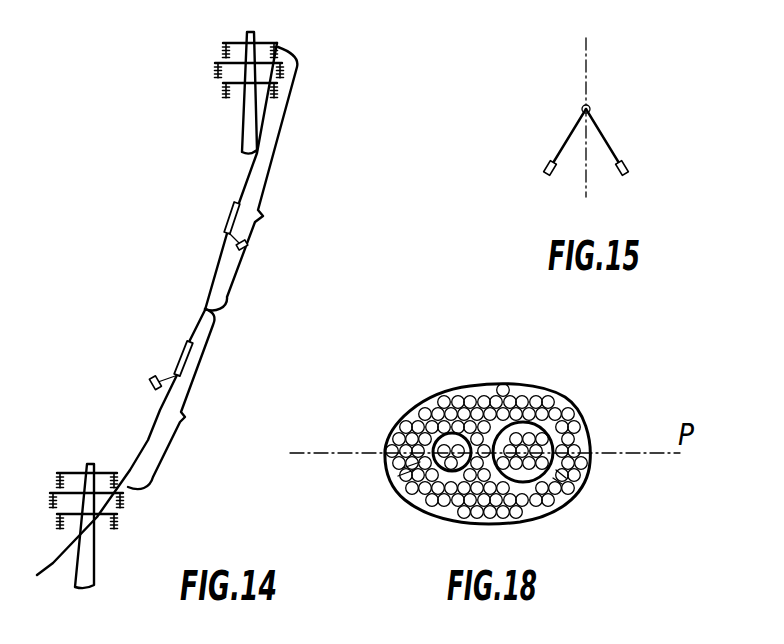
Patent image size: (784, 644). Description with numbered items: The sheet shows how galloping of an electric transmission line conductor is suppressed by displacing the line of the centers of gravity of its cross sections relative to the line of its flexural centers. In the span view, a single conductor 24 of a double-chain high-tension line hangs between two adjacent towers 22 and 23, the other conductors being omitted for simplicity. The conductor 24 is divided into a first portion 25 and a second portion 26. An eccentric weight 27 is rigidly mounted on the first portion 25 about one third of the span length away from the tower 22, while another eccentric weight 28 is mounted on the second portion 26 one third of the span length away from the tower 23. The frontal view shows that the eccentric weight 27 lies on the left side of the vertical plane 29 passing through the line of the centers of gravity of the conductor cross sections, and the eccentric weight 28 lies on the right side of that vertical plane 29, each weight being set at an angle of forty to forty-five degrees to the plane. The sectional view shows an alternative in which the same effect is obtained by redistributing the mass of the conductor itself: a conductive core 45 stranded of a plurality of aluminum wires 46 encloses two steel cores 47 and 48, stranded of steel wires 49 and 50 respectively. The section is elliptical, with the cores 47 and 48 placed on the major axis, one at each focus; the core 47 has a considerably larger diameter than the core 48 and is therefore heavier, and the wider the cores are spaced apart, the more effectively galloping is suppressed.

In FIG. 14, the tower 22 is at (88, 567).
In FIG. 14, the tower 23 is at (243, 114).
In FIG. 14, the conductor 24 is at (154, 425).
In FIG. 15, the conductor 24 is at (592, 109).
In FIG. 14, the first portion 25 is at (172, 399).
In FIG. 14, the second portion 26 is at (251, 178).
In FIG. 14, the eccentric weight 27 is at (147, 382).
In FIG. 15, the eccentric weight 27 is at (549, 162).
In FIG. 14, the eccentric weight 28 is at (236, 246).
In FIG. 15, the eccentric weight 28 is at (626, 171).
In FIG. 15, the vertical plane 29 is at (587, 85).
In FIG. 18, the core 45 is at (570, 390).
In FIG. 18, the aluminum wires 46 is at (468, 396).
In FIG. 18, the core 47 is at (557, 474).
In FIG. 18, the core 48 is at (433, 465).
In FIG. 18, the steel wires 49 is at (527, 479).
In FIG. 18, the steel wires 50 is at (455, 472).